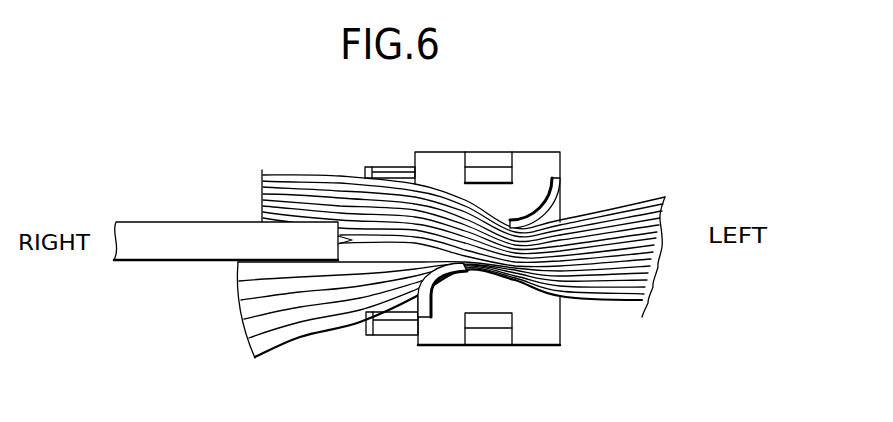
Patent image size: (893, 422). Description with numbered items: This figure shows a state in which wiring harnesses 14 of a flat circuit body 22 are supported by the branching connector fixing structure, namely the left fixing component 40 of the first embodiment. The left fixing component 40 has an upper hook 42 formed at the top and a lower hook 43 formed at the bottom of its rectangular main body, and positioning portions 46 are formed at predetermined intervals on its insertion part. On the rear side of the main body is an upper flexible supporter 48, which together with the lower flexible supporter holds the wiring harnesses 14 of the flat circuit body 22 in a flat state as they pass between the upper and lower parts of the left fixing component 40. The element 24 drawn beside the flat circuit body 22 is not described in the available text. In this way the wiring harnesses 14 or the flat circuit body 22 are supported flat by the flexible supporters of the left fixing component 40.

The wiring harnesses 14 is at (585, 273).
The flat circuit body 22 is at (343, 272).
The plate member 24 is at (162, 214).
The left fixing component 40 is at (540, 142).
The upper hook 42 is at (482, 172).
The lower hook 43 is at (495, 323).
The positioning portions 46 is at (444, 284).
The upper flexible supporter 48 is at (560, 210).